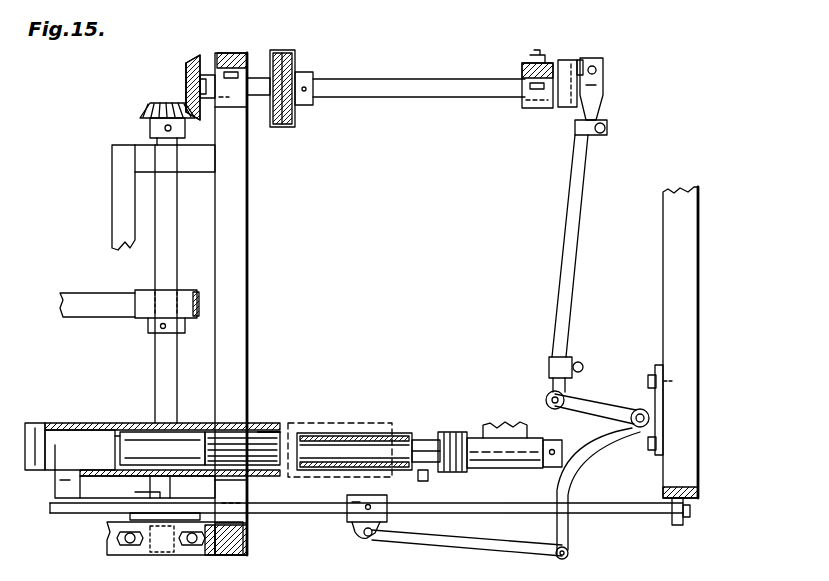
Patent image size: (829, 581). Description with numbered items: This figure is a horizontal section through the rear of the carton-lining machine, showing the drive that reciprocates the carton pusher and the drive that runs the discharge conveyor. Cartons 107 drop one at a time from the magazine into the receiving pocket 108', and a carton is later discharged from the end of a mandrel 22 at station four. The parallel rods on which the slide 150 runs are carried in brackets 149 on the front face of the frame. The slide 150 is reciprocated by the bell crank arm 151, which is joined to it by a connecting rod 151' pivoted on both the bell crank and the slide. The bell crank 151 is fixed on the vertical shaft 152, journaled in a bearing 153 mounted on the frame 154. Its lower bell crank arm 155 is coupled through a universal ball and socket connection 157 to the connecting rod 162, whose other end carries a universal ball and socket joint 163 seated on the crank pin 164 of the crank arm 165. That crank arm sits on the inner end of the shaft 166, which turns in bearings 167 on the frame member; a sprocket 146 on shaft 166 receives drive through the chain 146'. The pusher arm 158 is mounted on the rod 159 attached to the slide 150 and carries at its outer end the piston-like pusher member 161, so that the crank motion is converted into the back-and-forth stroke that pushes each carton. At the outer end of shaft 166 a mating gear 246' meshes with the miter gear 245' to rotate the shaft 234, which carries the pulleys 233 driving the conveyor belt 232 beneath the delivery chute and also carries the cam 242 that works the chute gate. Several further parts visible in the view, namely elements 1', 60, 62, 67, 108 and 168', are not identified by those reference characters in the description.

The cutting unit (dashed outline) 1' is at (340, 428).
The mandrel 22 is at (423, 447).
The shaft 60 is at (520, 462).
The gear 62 is at (458, 433).
The pin 67 is at (420, 478).
The carton 107 is at (135, 440).
The cylinder 108 is at (229, 428).
The receiving pocket 108' is at (280, 411).
The sprocket 146 is at (328, 105).
The chain 146' is at (305, 109).
The brackets 149 is at (676, 527).
The slide 150 is at (348, 520).
The bell crank arm 151 is at (599, 493).
The connecting rod 151' is at (463, 554).
The vertical shaft 152 is at (650, 417).
The bearing 153 is at (664, 444).
The frame 154 is at (229, 236).
The lower bell crank arm 155 is at (630, 392).
The ball and socket connection 157 is at (545, 396).
The pusher arm 158 is at (84, 488).
The rod 159 is at (480, 505).
The pusher member 161 is at (80, 442).
The connecting rod 162 is at (568, 242).
The universal ball and socket joint 163 is at (605, 72).
The crank pin 164 is at (581, 60).
The crank arm 165 is at (572, 58).
The shaft 166 is at (462, 79).
The bearings 167 is at (524, 108).
The hub 168' is at (220, 48).
The conveyor belt 232 is at (108, 298).
The pulley 233 is at (143, 312).
The shaft 234 is at (165, 358).
The cam 242 is at (133, 514).
The miter gear 245' is at (126, 124).
The mating gear 246' is at (160, 87).